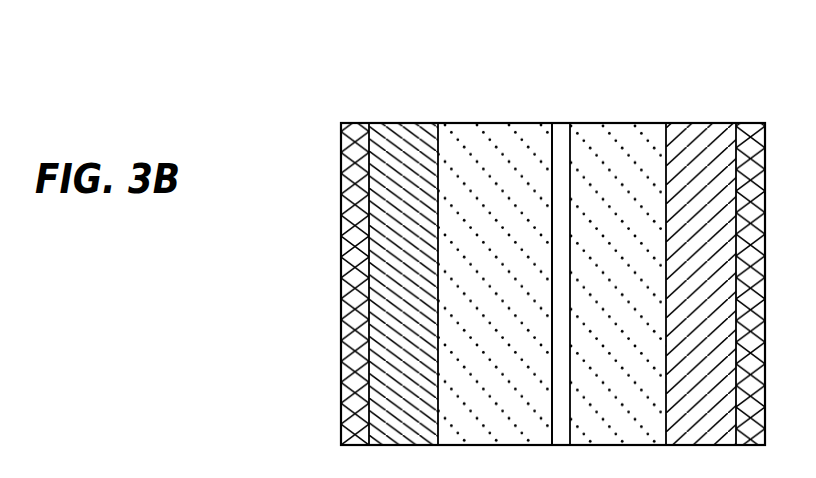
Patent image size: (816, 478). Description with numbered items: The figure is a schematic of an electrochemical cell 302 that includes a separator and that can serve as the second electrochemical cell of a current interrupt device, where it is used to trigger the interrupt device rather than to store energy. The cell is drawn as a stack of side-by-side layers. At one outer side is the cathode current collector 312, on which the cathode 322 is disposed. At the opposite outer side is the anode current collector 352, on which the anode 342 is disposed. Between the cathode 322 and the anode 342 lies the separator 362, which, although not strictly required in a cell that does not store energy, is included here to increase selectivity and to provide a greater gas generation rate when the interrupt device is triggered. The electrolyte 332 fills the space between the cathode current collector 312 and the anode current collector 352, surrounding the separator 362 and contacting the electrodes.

The electrochemical cell 302 is at (400, 62).
The cathode current collector 312 is at (341, 270).
The cathode 322 is at (369, 196).
The electrolyte 332 is at (498, 431).
The separator 362 is at (552, 180).
The anode 342 is at (666, 160).
The anode current collector 352 is at (737, 163).